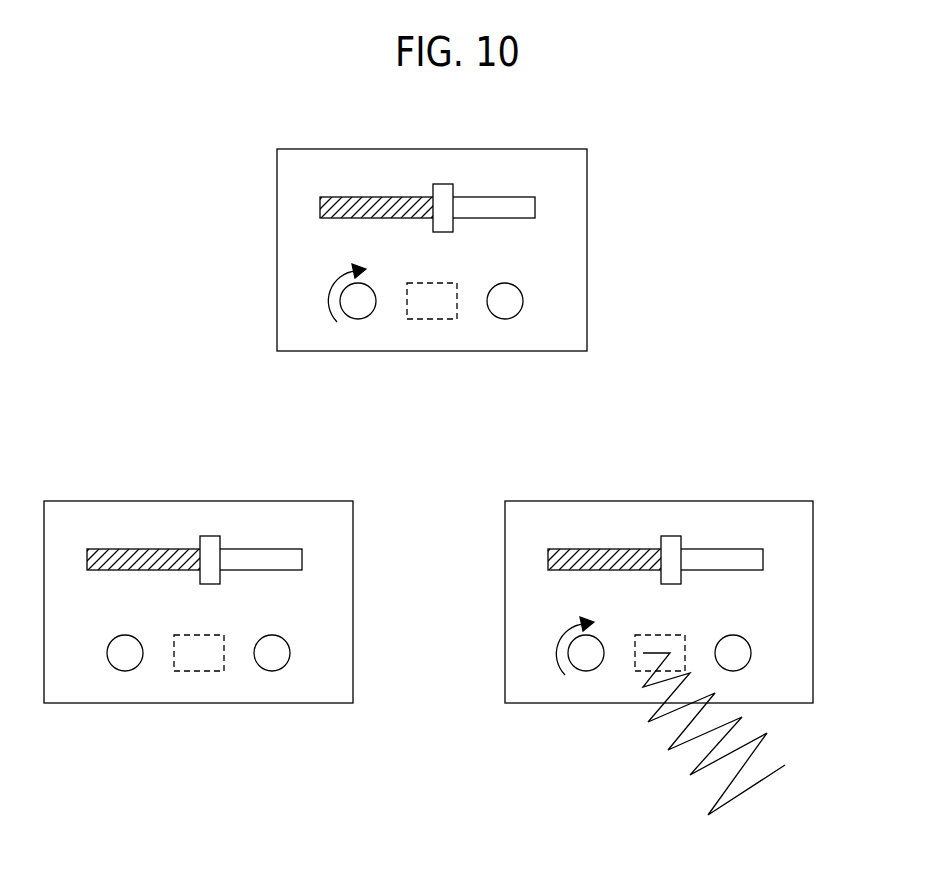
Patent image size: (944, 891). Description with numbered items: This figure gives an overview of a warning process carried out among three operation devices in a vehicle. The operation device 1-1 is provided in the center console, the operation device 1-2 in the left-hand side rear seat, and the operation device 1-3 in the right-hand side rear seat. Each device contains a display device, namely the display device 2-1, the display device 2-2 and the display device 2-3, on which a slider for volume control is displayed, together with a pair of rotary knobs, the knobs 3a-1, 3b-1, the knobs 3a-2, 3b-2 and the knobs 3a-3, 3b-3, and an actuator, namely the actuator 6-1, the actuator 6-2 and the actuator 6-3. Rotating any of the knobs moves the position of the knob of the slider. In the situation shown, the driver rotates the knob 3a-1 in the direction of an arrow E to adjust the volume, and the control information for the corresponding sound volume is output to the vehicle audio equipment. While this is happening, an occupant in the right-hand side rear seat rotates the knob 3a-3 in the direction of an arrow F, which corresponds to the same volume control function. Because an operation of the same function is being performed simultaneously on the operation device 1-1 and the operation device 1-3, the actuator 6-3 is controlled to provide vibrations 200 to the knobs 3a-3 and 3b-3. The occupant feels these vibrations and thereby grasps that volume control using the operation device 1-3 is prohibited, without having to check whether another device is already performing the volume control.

The vibrations 200 is at (698, 764).
The operation device 1-1 is at (587, 190).
The display device 2-1 is at (570, 245).
The knob 3a-1 is at (355, 319).
The knob 3b-1 is at (510, 319).
The actuator 6-1 is at (427, 319).
The operation device 1-2 is at (353, 549).
The display device 2-2 is at (340, 592).
The knob 3a-2 is at (124, 671).
The knob 3b-2 is at (275, 671).
The actuator 6-2 is at (200, 671).
The operation device 1-3 is at (813, 549).
The display device 2-3 is at (798, 592).
The knob 3a-3 is at (582, 672).
The knob 3b-3 is at (748, 663).
The actuator 6-3 is at (628, 671).
The arrow E is at (330, 295).
The arrow F is at (562, 643).